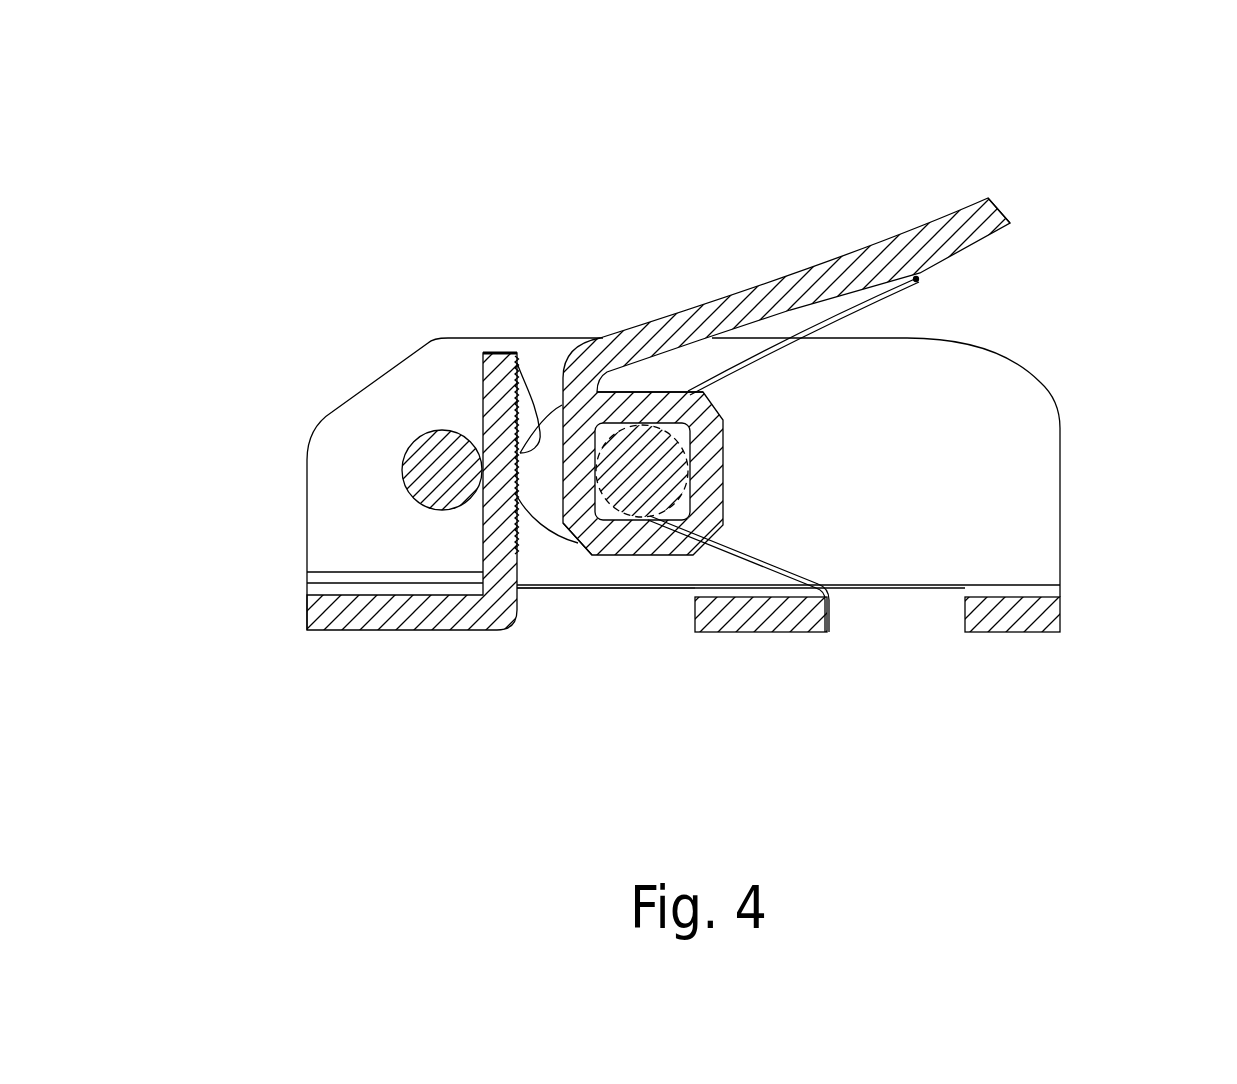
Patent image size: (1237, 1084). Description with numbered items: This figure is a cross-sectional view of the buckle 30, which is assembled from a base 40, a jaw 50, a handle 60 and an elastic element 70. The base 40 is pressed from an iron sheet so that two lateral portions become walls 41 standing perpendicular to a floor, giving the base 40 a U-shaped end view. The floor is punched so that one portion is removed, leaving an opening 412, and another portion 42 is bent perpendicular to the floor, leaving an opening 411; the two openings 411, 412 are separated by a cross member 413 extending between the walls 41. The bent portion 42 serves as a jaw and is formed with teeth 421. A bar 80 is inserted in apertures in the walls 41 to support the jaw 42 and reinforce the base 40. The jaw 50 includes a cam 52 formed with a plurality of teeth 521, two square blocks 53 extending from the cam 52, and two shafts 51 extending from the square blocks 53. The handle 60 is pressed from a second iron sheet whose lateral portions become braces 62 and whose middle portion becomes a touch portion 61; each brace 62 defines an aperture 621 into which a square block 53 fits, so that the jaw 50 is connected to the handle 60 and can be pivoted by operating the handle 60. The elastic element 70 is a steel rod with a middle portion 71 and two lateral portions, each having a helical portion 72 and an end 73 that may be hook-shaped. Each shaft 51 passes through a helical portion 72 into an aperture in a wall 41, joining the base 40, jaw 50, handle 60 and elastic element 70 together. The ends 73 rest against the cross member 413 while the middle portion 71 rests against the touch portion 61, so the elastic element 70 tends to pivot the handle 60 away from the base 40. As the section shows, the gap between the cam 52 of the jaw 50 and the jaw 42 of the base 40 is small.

The buckle 30 is at (699, 568).
The base 40 is at (699, 543).
The walls 41 is at (1023, 427).
The opening 411 is at (583, 608).
The opening 412 is at (918, 608).
The cross member 413 is at (737, 615).
The jaw 42 is at (492, 412).
The teeth 421 is at (510, 565).
The jaw 50 is at (393, 478).
The shafts 51 is at (665, 450).
The cam 52 is at (545, 493).
The teeth 521 is at (519, 378).
The square blocks 53 is at (602, 420).
The handle 60 is at (781, 391).
The touch portion 61 is at (957, 240).
The braces 62 is at (630, 407).
The aperture 621 is at (580, 543).
The elastic element 70 is at (830, 513).
The middle portion 71 is at (912, 284).
The helical portion 72 is at (631, 520).
The end 73 is at (828, 613).
The bar 80 is at (435, 482).